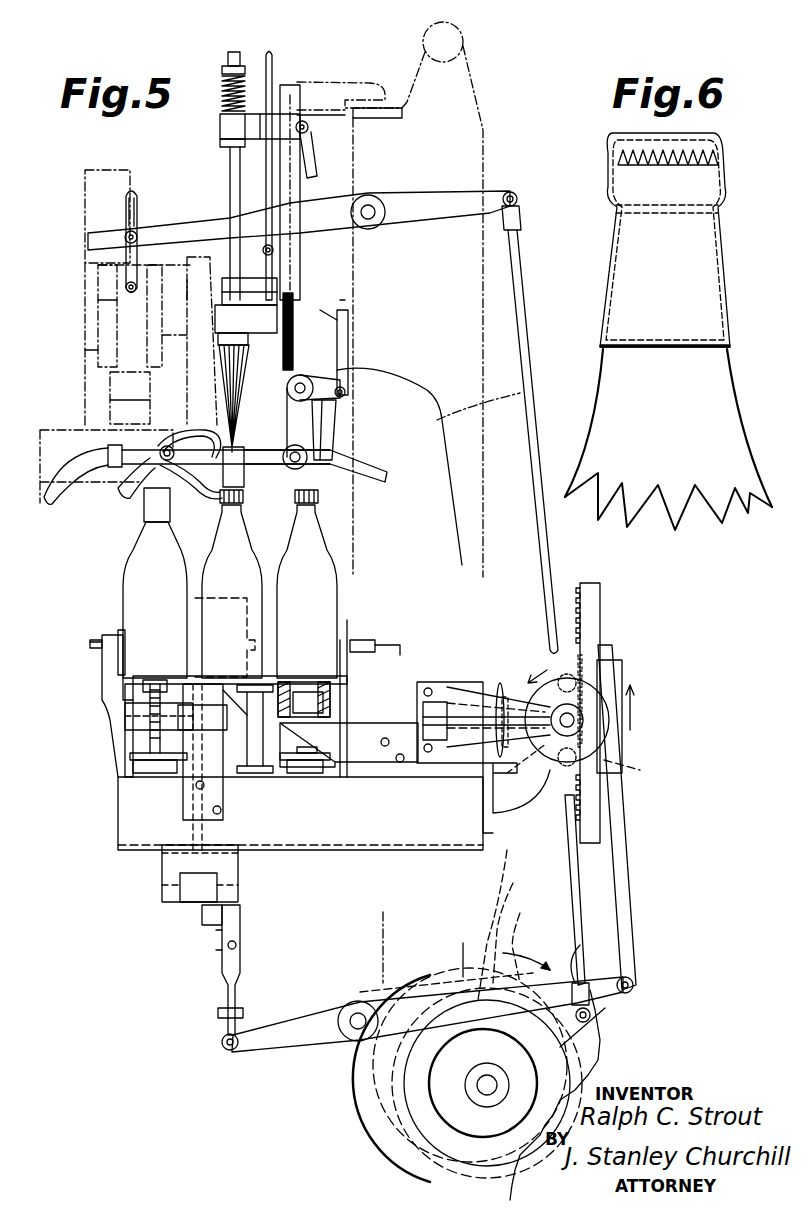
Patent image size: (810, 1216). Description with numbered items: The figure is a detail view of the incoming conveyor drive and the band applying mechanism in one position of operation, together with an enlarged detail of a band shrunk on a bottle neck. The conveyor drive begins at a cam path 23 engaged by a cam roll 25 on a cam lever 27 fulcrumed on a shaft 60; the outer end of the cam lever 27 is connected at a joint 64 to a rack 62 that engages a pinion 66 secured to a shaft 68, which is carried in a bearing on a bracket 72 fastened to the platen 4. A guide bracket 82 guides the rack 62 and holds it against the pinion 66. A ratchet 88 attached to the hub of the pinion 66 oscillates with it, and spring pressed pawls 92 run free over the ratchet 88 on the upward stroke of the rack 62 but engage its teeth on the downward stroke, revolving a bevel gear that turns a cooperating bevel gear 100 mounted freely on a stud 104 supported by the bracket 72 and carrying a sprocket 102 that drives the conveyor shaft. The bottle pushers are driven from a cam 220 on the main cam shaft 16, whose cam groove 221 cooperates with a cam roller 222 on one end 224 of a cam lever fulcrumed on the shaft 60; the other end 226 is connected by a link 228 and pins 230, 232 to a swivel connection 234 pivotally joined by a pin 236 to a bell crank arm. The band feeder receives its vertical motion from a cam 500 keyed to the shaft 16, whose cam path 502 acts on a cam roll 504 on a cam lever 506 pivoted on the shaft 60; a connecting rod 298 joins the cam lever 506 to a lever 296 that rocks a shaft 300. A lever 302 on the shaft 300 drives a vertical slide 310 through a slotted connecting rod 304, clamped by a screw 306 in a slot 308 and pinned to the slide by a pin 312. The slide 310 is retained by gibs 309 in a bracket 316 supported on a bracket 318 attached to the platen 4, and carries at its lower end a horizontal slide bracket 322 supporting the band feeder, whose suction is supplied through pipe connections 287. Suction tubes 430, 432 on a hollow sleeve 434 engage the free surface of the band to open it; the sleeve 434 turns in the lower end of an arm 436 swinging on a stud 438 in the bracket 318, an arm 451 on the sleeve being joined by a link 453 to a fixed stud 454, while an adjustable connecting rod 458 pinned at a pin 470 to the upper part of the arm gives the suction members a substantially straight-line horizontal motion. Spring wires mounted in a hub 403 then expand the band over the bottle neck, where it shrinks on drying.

In FIG. 5, the platen 4 is at (340, 848).
In FIG. 5, the main cam shaft 16 is at (487, 1085).
In FIG. 5, the cam path 23 is at (437, 1065).
In FIG. 5, the cam roll 25 is at (447, 954).
In FIG. 5, the cam lever 27 is at (563, 983).
In FIG. 5, the shaft 60 is at (352, 1035).
In FIG. 5, the rack 62 is at (620, 840).
In FIG. 5, the pivot 64 is at (632, 978).
In FIG. 5, the pinion 66 is at (641, 760).
In FIG. 5, the shaft 68 is at (598, 660).
In FIG. 5, the bracket 72 is at (420, 770).
In FIG. 5, the guide bracket 82 is at (622, 672).
In FIG. 5, the ratchet 88 is at (556, 672).
In FIG. 5, the spring pressed pawls 92 is at (558, 650).
In FIG. 5, the bevel gear 100 is at (497, 690).
In FIG. 5, the sprocket 102 is at (507, 700).
In FIG. 5, the stud 104 is at (483, 752).
In FIG. 5, the cam 220 is at (531, 897).
In FIG. 5, the cam groove 221 is at (526, 928).
In FIG. 5, the cam roller 222 is at (535, 943).
In FIG. 5, the cam lever end 224 is at (400, 990).
In FIG. 5, the cam lever end 226 is at (340, 972).
In FIG. 5, the link 228 is at (240, 965).
In FIG. 5, the pin 230 is at (243, 1010).
In FIG. 5, the pin 232 is at (236, 942).
In FIG. 5, the swivel connection 234 is at (222, 930).
In FIG. 5, the pin 236 is at (240, 900).
In FIG. 5, the pipe connections 287 is at (78, 445).
In FIG. 5, the lever 296 is at (430, 195).
In FIG. 5, the connecting rod 298 is at (532, 310).
In FIG. 5, the shaft 300 is at (368, 195).
In FIG. 5, the lever 302 is at (220, 232).
In FIG. 5, the slotted connecting rod 304 is at (140, 188).
In FIG. 5, the clamping connecting screw 306 is at (125, 238).
In FIG. 5, the slot 308 is at (128, 211).
In FIG. 5, the gibs 309 is at (102, 333).
In FIG. 5, the vertical slide 310 is at (110, 392).
In FIG. 5, the pin 312 is at (74, 299).
In FIG. 5, the bracket 316 is at (167, 267).
In FIG. 5, the bracket 318 is at (520, 393).
In FIG. 5, the horizontal slide bracket 322 is at (62, 498).
In FIG. 5, the hub 403 is at (148, 512).
In FIG. 6, the hub 403 is at (723, 270).
In FIG. 5, the suction tube 430 is at (283, 416).
In FIG. 5, the suction tube 432 is at (246, 482).
In FIG. 5, the hollow sleeve 434 is at (310, 478).
In FIG. 5, the arm 436 is at (287, 400).
In FIG. 5, the stud 438 is at (334, 392).
In FIG. 5, the arm 451 is at (310, 470).
In FIG. 5, the link 453 is at (330, 436).
In FIG. 5, the fixed stud 454 is at (358, 300).
In FIG. 5, the adjustable connecting rod 458 is at (350, 335).
In FIG. 5, the pin 470 is at (340, 392).
In FIG. 5, the cam 500 is at (600, 1052).
In FIG. 5, the cam path 502 is at (592, 1025).
In FIG. 5, the cam roll 504 is at (423, 1070).
In FIG. 5, the cam lever 506 is at (405, 942).